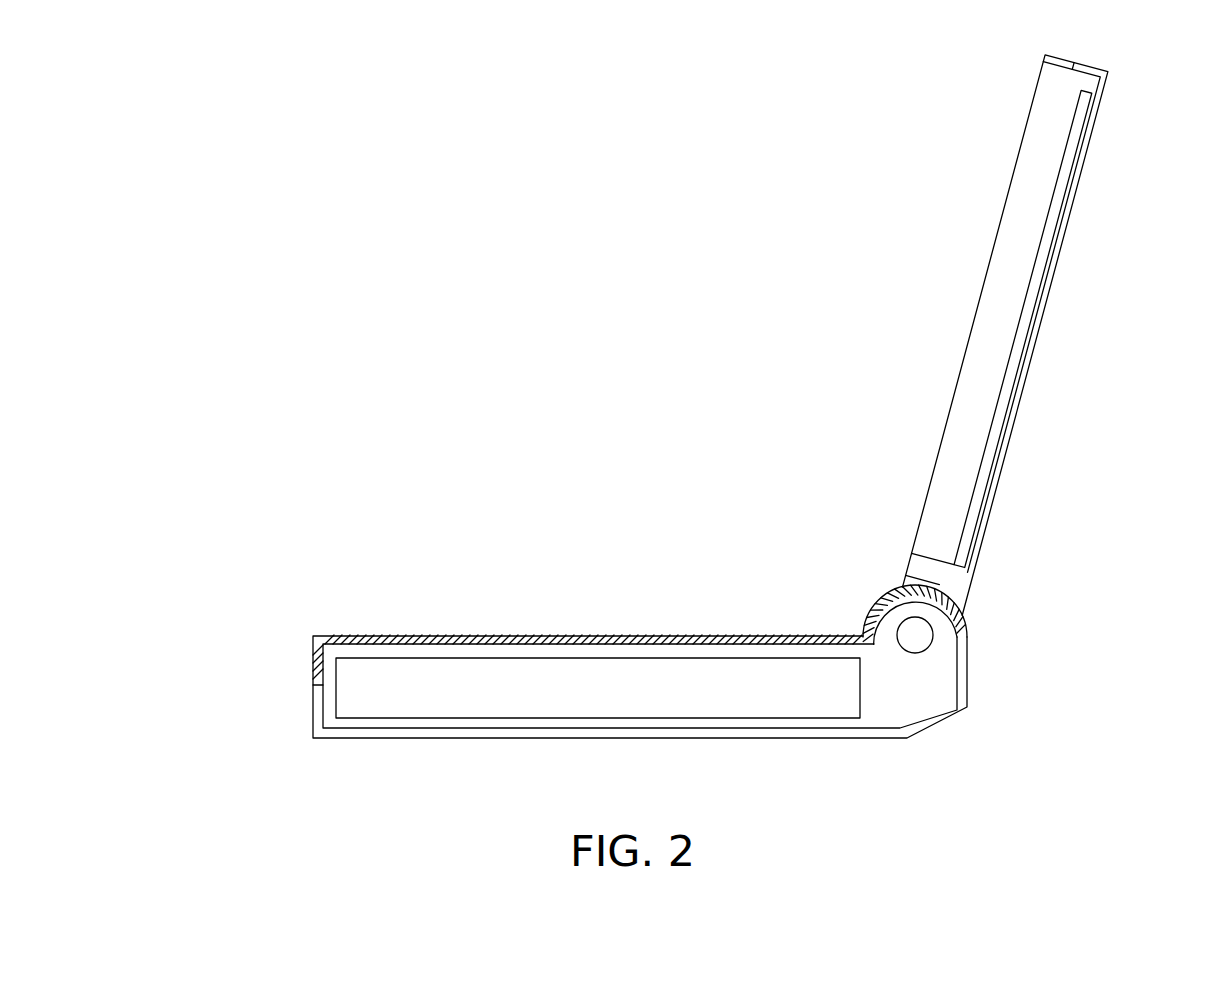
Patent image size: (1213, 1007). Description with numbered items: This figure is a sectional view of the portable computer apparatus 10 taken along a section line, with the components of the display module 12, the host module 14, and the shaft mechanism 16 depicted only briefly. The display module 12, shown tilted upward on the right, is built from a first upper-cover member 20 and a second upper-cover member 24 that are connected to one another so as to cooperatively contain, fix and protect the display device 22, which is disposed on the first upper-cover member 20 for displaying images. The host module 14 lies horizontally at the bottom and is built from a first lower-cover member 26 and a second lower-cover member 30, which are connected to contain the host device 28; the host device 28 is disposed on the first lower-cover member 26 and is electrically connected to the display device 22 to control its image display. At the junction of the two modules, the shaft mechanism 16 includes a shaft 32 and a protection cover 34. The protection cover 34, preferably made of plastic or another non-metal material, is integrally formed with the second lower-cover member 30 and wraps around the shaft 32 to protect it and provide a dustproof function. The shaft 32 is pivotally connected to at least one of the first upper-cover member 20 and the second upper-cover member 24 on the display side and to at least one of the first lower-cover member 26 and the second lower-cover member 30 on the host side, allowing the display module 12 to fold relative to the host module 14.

The portable computer apparatus 10 is at (416, 198).
The display module 12 is at (1122, 240).
The host module 14 is at (240, 600).
The shaft mechanism 16 is at (1073, 552).
The first upper-cover member 20 is at (1003, 335).
The display device 22 is at (1023, 328).
The second upper-cover member 24 is at (967, 350).
The first lower-cover member 26 is at (343, 735).
The host device 28 is at (370, 677).
The second lower-cover member 30 is at (343, 640).
The shaft 32 is at (915, 637).
The protection cover 34 is at (951, 593).